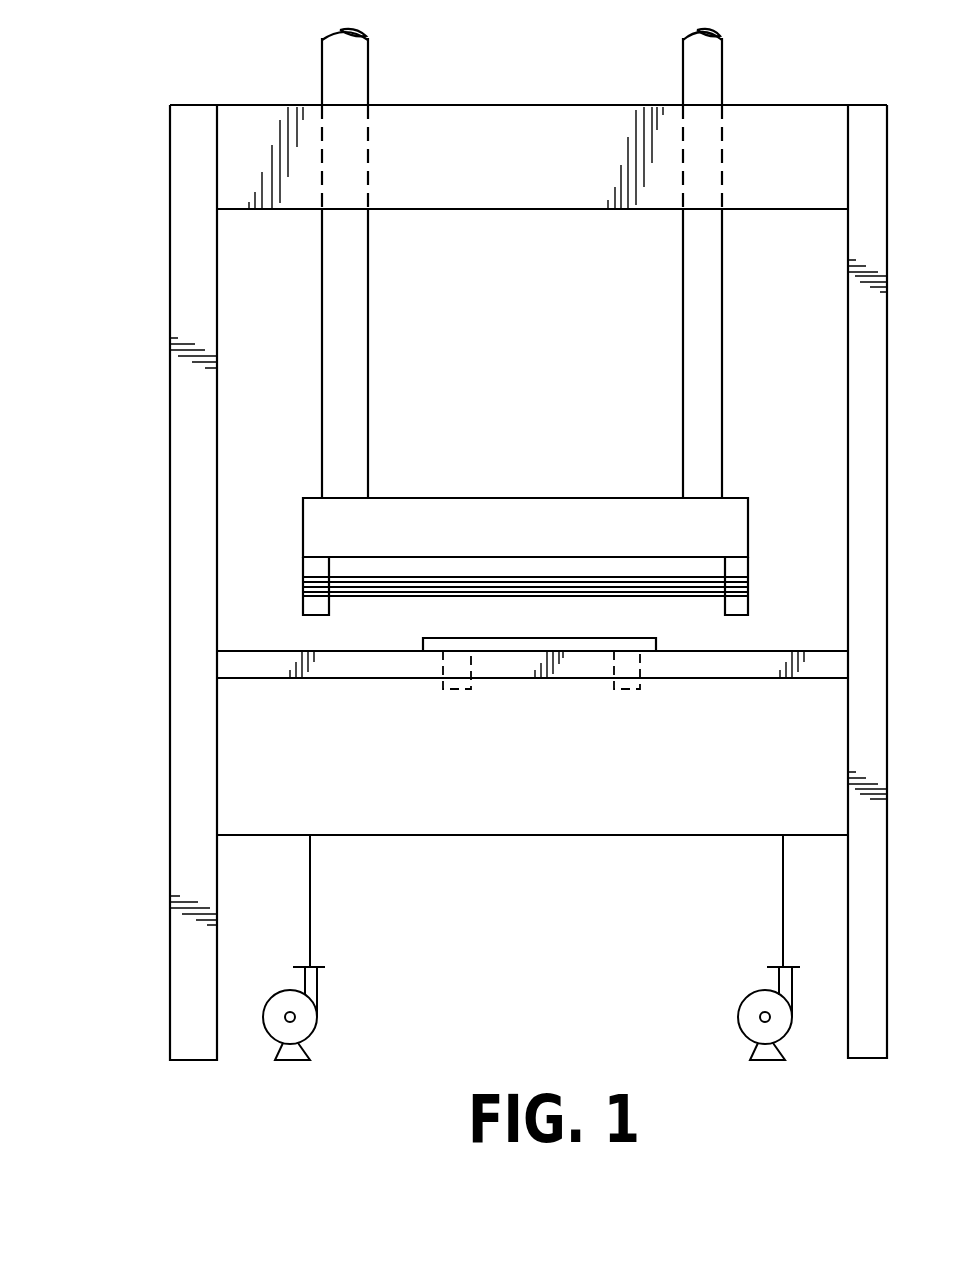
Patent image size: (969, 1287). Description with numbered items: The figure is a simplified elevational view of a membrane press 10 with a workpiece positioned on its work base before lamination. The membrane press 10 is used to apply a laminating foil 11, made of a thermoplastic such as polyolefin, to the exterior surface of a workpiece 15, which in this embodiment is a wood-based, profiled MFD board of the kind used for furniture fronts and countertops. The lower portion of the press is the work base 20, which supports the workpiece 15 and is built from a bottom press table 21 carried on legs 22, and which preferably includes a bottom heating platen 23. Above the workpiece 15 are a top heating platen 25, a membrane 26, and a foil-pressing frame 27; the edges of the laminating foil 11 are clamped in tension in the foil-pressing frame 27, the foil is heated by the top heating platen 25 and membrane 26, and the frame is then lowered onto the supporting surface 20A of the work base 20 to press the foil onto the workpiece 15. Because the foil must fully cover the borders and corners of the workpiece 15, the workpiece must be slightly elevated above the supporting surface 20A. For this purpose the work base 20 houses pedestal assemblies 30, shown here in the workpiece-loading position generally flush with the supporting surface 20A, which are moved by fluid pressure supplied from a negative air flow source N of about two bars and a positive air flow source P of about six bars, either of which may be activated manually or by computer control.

The membrane press 10 is at (105, 300).
The laminating foil 11 is at (710, 595).
The workpiece 15 is at (571, 648).
The work base 20 is at (451, 833).
The supporting surface 20A is at (257, 651).
The bottom press table 21 is at (268, 790).
The legs 22 is at (193, 1047).
The bottom heating platen 23 is at (747, 667).
The top heating platen 25 is at (530, 525).
The membrane 26 is at (710, 572).
The foil-pressing frame 27 is at (303, 565).
The pedestal assemblies 30 is at (450, 698).
The negative air flow source N is at (308, 1015).
The positive air flow source P is at (750, 1013).